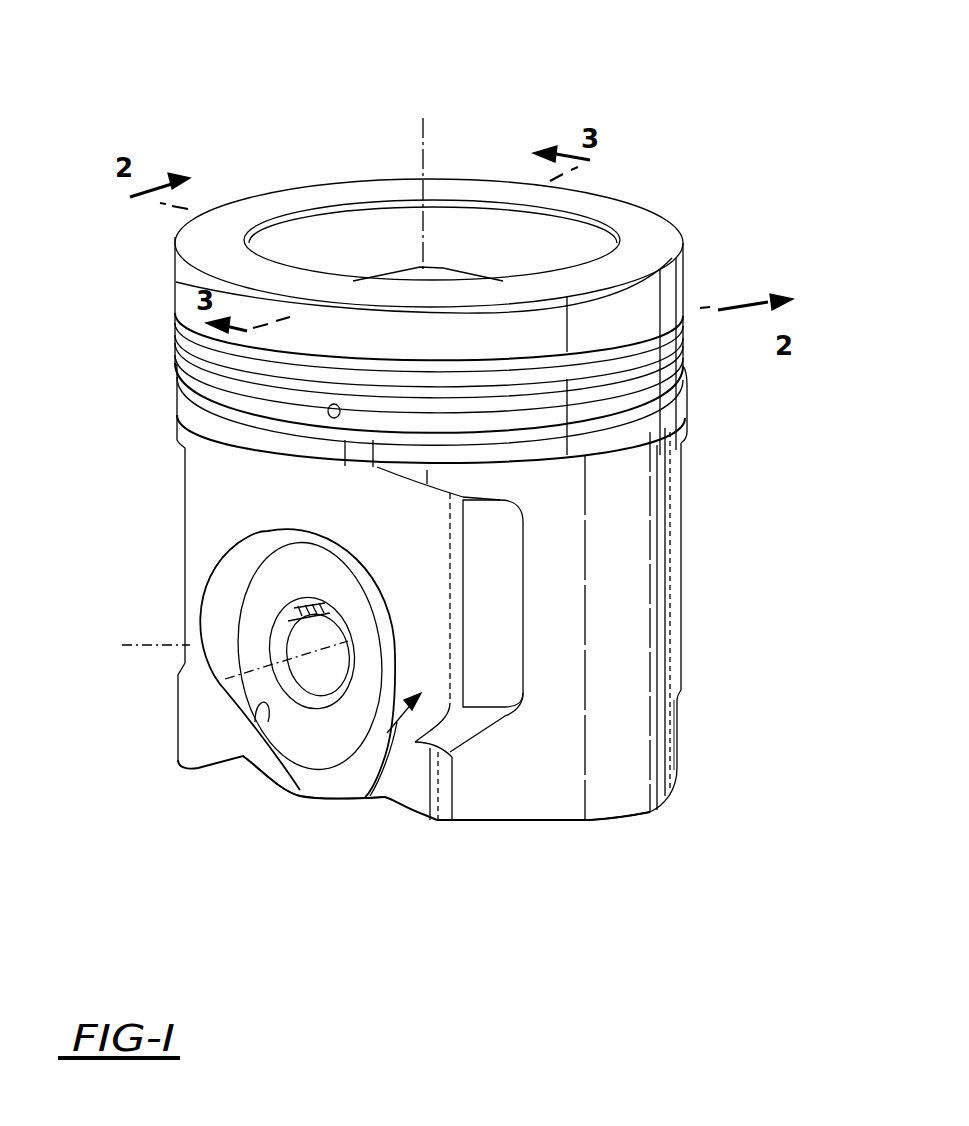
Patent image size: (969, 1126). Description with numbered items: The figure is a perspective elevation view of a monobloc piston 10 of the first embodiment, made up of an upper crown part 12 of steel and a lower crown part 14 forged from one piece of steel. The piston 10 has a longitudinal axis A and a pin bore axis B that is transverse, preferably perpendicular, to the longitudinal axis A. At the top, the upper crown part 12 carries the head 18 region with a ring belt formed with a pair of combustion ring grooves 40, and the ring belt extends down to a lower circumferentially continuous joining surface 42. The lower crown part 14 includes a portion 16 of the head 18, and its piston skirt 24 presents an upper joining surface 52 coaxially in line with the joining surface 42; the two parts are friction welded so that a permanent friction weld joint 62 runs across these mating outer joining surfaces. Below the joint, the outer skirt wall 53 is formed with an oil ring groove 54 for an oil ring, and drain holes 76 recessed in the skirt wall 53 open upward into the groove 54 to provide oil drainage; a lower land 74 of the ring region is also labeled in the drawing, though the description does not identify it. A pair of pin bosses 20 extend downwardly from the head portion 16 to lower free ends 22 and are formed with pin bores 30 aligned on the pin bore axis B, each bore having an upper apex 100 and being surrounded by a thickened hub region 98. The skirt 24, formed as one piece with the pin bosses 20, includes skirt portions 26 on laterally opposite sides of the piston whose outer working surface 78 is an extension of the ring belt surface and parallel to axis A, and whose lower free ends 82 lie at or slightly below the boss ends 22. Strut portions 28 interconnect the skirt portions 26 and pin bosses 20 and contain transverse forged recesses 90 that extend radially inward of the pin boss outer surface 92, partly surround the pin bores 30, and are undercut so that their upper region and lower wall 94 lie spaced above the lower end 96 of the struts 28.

The monobloc piston 10 is at (240, 116).
The upper crown part 12 is at (672, 208).
The lower crown part 14 is at (692, 433).
The head portion 16 is at (207, 390).
The head 18 is at (168, 293).
The pin bosses 20 is at (280, 798).
The lower free ends of pin bosses 22 is at (317, 800).
The piston skirt 24 is at (680, 610).
The skirt portions 26 is at (548, 812).
The strut portions 28 is at (376, 812).
The pin bores 30 is at (237, 753).
The combustion ring grooves 40 is at (473, 393).
The lower joining surface of ring belt 42 is at (328, 404).
The upper joining surface of skirt 52 is at (597, 375).
The outer skirt wall 53 is at (226, 437).
The oil ring groove 54 is at (537, 433).
The outer friction weld joint 62 is at (287, 412).
The lower ring land lip 74 is at (195, 418).
The drain holes 76 is at (356, 448).
The outer working surface 78 is at (658, 650).
The lower free ends of skirt portions 82 is at (622, 815).
The transverse forged recesses 90 is at (372, 790).
The outer surface of pin bosses 92 is at (268, 763).
The upper undercut regions / lower wall of recesses 94 is at (450, 757).
The lower end of struts 96 is at (400, 797).
The thickened hub region 98 is at (233, 603).
The upper apex of pin bores 100 is at (250, 533).
The longitudinal axis A is at (423, 148).
The pin bore axis B is at (224, 651).